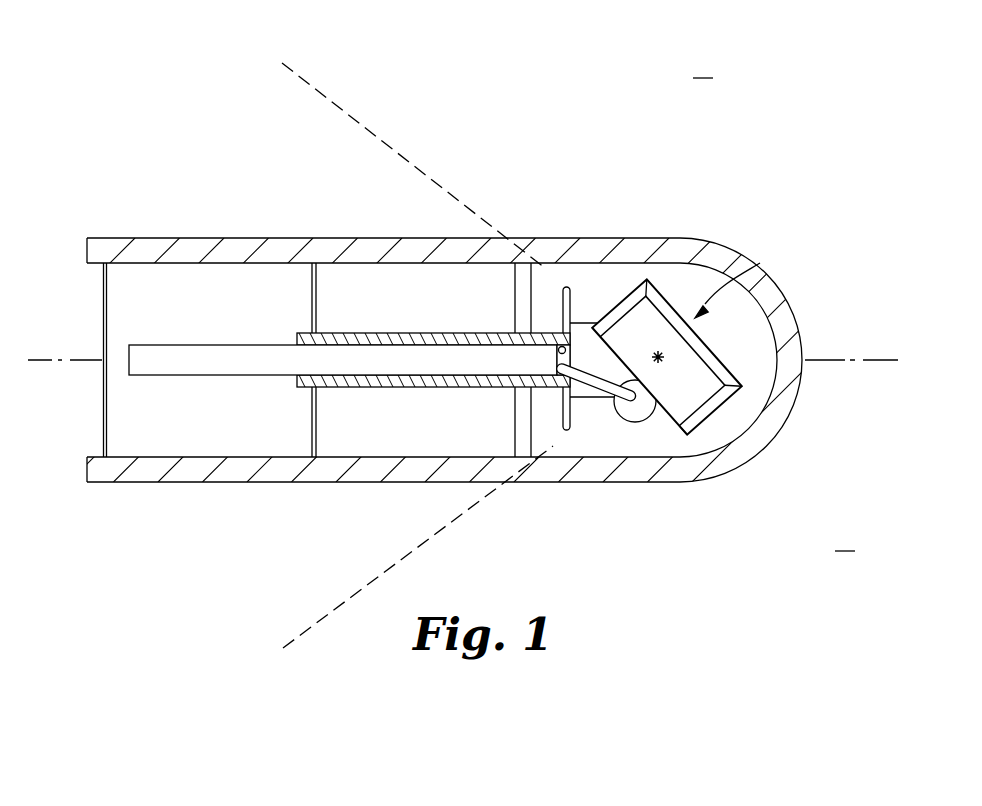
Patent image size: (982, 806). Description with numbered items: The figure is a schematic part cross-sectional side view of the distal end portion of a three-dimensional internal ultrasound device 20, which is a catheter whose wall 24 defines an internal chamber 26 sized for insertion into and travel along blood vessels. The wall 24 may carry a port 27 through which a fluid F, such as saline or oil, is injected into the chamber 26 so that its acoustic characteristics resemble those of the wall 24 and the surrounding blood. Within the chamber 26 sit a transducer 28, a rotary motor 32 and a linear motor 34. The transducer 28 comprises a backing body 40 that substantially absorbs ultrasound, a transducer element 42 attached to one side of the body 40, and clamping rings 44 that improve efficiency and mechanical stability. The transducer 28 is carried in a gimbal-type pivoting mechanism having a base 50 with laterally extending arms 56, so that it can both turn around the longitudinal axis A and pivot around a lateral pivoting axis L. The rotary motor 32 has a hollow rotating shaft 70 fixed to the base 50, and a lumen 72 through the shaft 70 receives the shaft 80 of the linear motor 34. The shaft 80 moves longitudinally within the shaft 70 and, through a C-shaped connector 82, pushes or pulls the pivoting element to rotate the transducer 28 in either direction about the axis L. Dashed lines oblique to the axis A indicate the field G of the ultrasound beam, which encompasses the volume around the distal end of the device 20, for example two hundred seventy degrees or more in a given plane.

The device 20 is at (468, 328).
The wall 24 is at (537, 250).
The internal chamber 26 is at (542, 447).
The port 27 is at (784, 297).
The transducer 28 is at (736, 277).
The rotary motor 32 is at (405, 300).
The linear motor 34 is at (202, 292).
The body 40 is at (682, 357).
The transducer element 42 is at (728, 378).
The clamping ring 44 is at (613, 306).
The base 50 is at (562, 332).
The arm 56 is at (582, 345).
The rotating shaft 70 is at (353, 380).
The lumen 72 is at (566, 345).
The shaft 80 is at (233, 362).
The C-shaped connector 82 is at (598, 387).
The axis A is at (51, 362).
The pivoting axis L is at (659, 350).
The fluid F is at (683, 290).
The field G is at (774, 303).